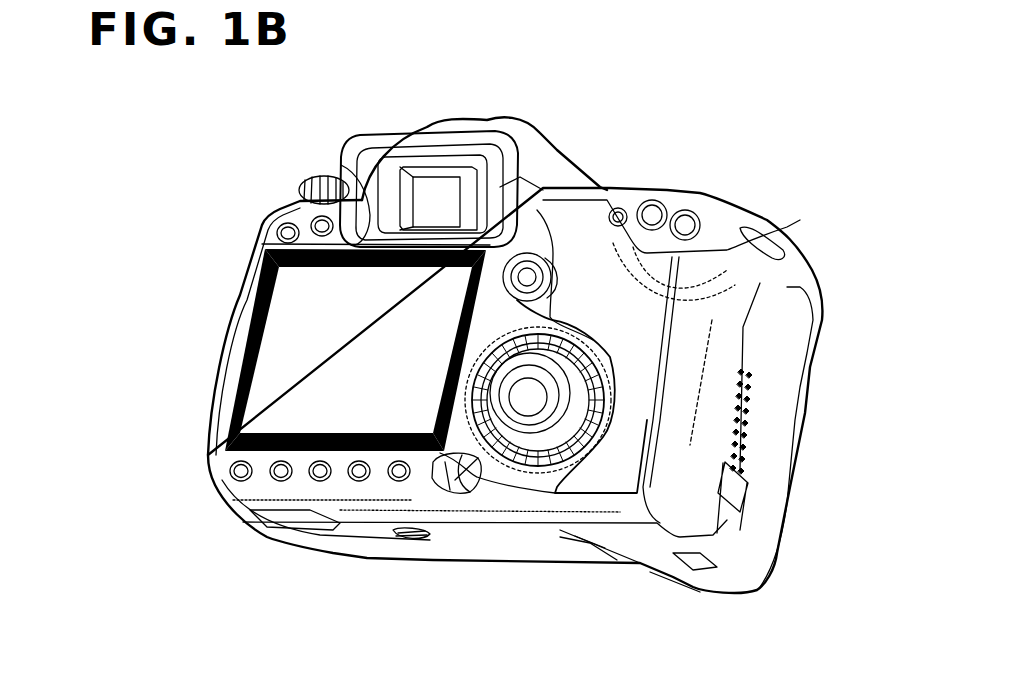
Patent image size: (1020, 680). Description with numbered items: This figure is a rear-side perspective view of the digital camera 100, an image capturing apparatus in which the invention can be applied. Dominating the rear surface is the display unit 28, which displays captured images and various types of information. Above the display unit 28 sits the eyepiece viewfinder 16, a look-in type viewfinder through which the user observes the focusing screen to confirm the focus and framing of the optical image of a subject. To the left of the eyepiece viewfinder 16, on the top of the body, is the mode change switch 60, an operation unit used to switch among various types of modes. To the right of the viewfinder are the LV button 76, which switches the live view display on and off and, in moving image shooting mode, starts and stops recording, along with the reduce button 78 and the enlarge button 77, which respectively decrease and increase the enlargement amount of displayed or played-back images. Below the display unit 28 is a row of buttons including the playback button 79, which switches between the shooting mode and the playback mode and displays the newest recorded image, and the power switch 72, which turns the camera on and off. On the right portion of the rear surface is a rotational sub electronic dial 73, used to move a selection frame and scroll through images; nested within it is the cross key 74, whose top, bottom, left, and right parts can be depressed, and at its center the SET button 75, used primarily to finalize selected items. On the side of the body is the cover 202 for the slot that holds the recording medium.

The digital camera 100 is at (515, 355).
The eyepiece viewfinder 16 is at (427, 219).
The mode change switch 60 is at (310, 178).
The display unit 28 is at (247, 307).
The LV button 76 is at (530, 273).
The reduce button 78 is at (643, 215).
The enlarge button 77 is at (687, 218).
The playback button 79 is at (402, 484).
The power switch 72 is at (457, 486).
The sub electronic dial 73 is at (497, 470).
The cross key 74 is at (509, 422).
The SET button 75 is at (529, 402).
The cover 202 is at (720, 378).